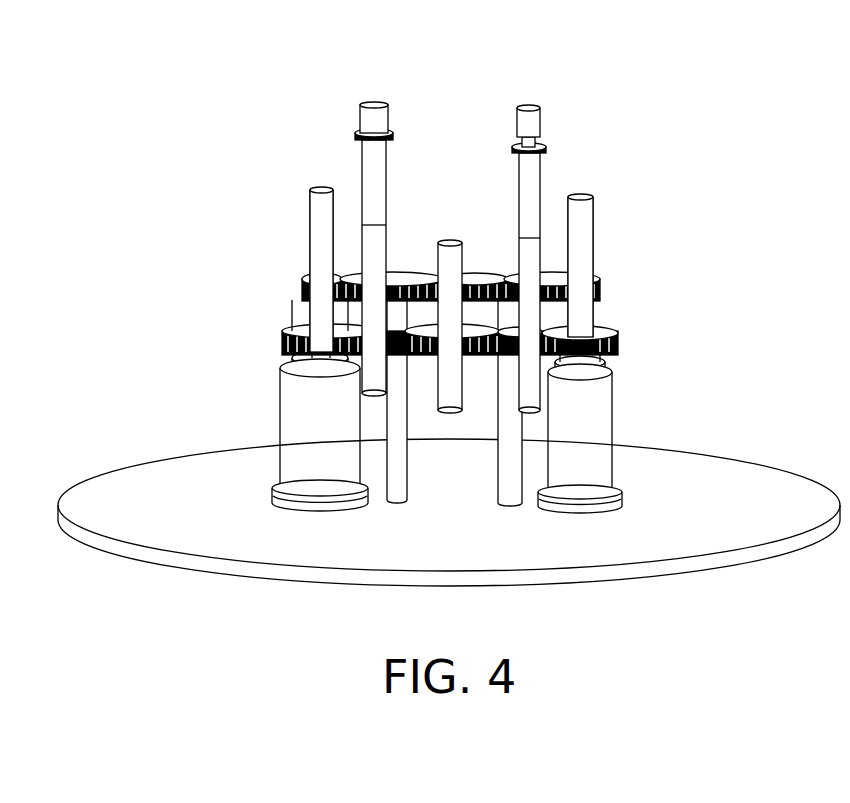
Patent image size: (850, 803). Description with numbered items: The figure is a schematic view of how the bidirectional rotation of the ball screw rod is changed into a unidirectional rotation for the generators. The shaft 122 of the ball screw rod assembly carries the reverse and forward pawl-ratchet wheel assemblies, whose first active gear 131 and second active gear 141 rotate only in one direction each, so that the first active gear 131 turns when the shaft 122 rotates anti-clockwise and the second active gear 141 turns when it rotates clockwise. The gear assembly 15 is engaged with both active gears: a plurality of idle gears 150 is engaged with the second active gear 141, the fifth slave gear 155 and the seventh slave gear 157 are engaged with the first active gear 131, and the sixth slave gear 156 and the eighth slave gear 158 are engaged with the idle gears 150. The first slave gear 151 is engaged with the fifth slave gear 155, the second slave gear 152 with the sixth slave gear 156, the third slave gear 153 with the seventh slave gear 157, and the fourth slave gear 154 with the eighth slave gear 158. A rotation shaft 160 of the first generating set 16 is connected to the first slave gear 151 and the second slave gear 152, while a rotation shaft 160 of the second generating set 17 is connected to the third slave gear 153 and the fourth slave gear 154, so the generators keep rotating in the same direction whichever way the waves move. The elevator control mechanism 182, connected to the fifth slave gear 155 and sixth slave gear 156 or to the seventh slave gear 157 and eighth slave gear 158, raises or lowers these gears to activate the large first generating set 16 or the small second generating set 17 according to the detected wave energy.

The gear assembly 15 is at (245, 232).
The first generating set 16 is at (594, 449).
The second generating set 17 is at (327, 449).
The shaft 122 is at (452, 242).
The first active gear 131 is at (478, 278).
The second active gear 141 is at (478, 356).
The idle gears 150 is at (507, 357).
The first slave gear 151 is at (598, 296).
The second slave gear 152 is at (613, 335).
The third slave gear 153 is at (302, 283).
The fourth slave gear 154 is at (285, 342).
The fifth slave gear 155 is at (550, 277).
The sixth slave gear 156 is at (612, 400).
The seventh slave gear 157 is at (312, 306).
The eighth slave gear 158 is at (300, 406).
The rotation shaft 160 is at (310, 220).
The elevator control mechanism 182 is at (358, 118).